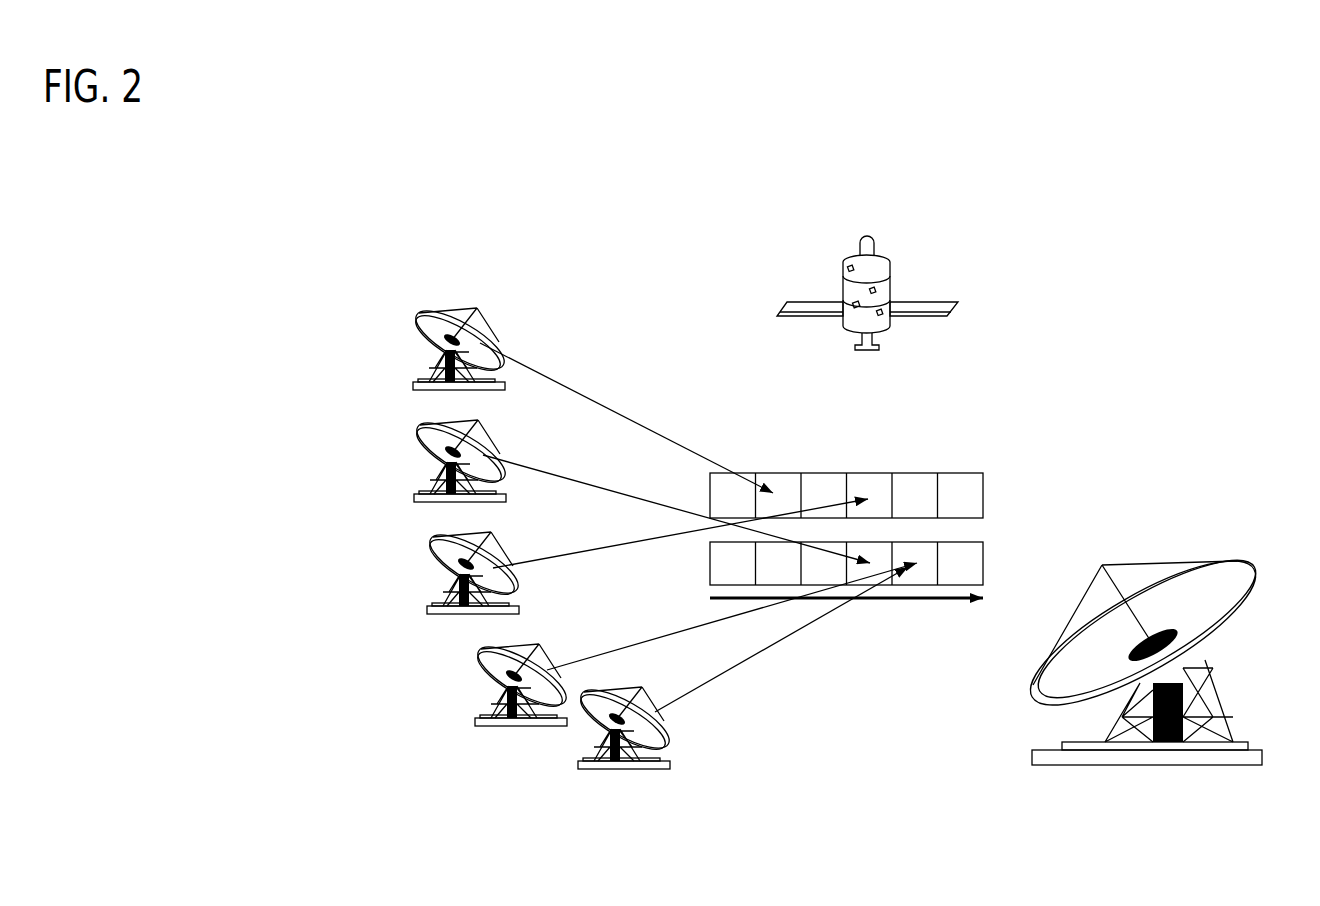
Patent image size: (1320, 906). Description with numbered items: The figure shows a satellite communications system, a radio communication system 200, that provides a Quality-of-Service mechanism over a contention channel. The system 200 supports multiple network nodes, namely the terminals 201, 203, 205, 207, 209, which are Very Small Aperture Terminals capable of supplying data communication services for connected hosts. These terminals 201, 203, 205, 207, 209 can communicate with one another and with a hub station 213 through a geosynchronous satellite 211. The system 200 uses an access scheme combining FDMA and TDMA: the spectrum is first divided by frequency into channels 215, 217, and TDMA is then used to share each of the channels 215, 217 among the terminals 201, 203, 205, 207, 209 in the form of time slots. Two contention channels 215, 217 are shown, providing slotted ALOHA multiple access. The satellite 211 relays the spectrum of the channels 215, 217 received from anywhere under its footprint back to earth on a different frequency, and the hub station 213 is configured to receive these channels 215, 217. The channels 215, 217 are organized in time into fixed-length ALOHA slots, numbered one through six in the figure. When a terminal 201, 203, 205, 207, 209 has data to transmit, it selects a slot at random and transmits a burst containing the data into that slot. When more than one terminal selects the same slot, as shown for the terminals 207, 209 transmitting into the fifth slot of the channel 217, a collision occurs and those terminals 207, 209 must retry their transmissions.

The radio communication system 200 is at (1110, 282).
The terminal 201 is at (413, 383).
The terminal 203 is at (413, 497).
The terminal 205 is at (427, 612).
The terminal 207 is at (475, 725).
The terminal 209 is at (580, 768).
The geosynchronous satellite 211 is at (890, 267).
The hub station 213 is at (1225, 762).
The contention channel 215 is at (985, 487).
The contention channel 217 is at (985, 570).